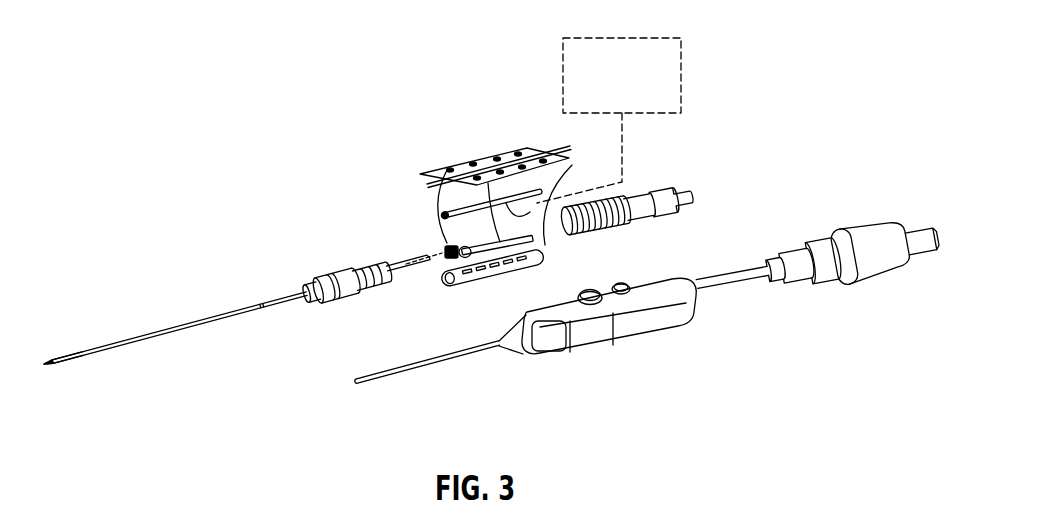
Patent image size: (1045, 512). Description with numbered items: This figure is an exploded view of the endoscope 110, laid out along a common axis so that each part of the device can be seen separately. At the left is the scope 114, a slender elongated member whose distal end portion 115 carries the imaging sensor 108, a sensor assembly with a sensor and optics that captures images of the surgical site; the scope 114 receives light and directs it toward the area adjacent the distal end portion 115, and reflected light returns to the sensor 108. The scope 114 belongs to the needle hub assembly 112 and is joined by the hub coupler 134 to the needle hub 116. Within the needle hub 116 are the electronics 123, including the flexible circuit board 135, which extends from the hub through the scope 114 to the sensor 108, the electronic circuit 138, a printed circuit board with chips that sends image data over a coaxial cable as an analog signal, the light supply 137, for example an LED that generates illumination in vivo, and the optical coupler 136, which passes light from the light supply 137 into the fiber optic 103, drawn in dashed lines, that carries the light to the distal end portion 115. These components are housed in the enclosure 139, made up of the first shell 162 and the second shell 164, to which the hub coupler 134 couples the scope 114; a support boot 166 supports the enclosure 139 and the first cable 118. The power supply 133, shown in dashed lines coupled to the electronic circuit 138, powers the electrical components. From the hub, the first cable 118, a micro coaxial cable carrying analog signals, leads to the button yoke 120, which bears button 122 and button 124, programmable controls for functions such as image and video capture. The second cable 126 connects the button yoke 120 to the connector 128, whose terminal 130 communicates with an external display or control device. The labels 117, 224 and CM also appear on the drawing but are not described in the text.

The fiber optic 103 is at (402, 262).
The imaging sensor 108 is at (61, 371).
The endoscope 110 is at (217, 88).
The needle hub assembly 112 is at (152, 290).
The scope 114 is at (118, 348).
The distal end portion 115 is at (56, 354).
The needle hub 116 is at (707, 86).
The needle tip 117 is at (41, 366).
The first cable 118 is at (415, 373).
The button yoke 120 is at (605, 340).
The button 122 is at (584, 294).
The electronics 123 is at (448, 293).
The button 124 is at (623, 285).
The second cable 126 is at (750, 290).
The connector 128 is at (840, 219).
The terminal 130 is at (906, 222).
The power supply 133 is at (600, 37).
The hub coupler 134 is at (326, 298).
The flexible circuit board 135 is at (391, 271).
The optical coupler 136 is at (442, 248).
The light supply 137 is at (453, 250).
The electronic circuit 138 is at (463, 172).
The enclosure 139 is at (550, 190).
The first shell 162 is at (508, 161).
The second shell 164 is at (478, 157).
The support boot 166 is at (633, 191).
The bar 224 is at (557, 255).
The conductive marker CM is at (263, 305).